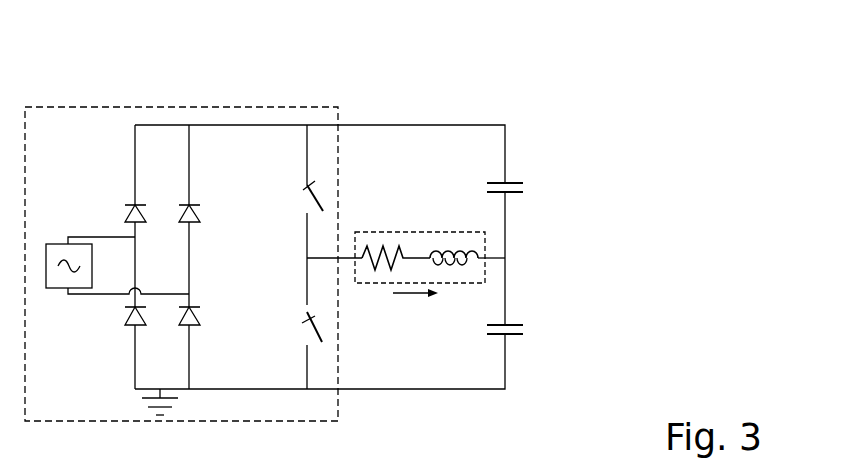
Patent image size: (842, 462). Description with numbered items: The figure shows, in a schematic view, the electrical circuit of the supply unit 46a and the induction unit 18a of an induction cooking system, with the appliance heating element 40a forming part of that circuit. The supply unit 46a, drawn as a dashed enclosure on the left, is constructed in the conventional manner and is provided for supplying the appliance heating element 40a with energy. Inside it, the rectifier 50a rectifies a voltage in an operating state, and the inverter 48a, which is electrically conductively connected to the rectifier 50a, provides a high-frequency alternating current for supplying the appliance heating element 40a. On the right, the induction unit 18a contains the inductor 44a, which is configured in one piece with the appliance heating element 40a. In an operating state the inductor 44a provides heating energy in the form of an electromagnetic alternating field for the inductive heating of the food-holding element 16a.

The food-holding element 16a is at (358, 210).
The supply unit 46a is at (90, 107).
The rectifier 50a is at (167, 118).
The inverter 48a is at (296, 190).
The induction unit 18a is at (436, 222).
The appliance heating element 40a is at (523, 174).
The inductor 44a is at (487, 244).